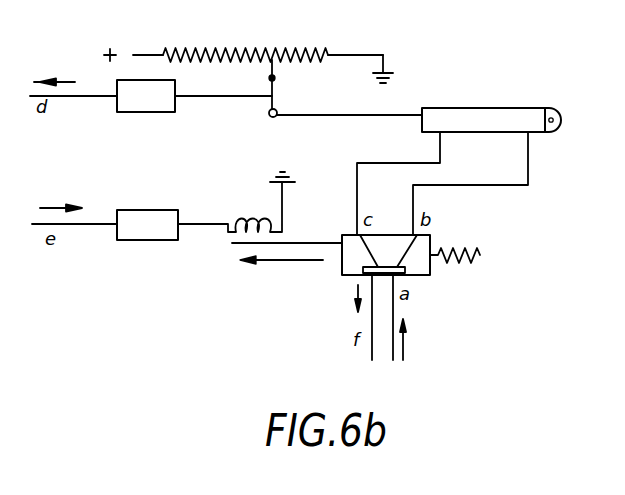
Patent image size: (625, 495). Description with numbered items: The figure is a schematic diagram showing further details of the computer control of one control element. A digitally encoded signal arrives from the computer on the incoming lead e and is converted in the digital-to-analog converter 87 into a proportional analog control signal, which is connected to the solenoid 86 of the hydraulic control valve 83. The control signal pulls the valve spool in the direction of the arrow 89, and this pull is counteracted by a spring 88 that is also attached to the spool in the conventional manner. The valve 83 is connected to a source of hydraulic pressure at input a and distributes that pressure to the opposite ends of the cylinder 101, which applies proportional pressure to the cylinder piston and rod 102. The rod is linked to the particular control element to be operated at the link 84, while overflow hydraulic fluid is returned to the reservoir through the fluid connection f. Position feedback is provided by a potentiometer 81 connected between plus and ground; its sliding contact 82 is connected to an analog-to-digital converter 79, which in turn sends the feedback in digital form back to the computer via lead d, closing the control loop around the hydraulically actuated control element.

The analog-to-digital converter 79 is at (150, 113).
The potentiometer 81 is at (328, 52).
The sliding contact 82 is at (275, 76).
The link 84 is at (263, 138).
The solenoid 86 is at (256, 222).
The digital-to-analog converter 87 is at (165, 240).
The spring 88 is at (468, 263).
The arrow 89 is at (290, 262).
The cylinder 101 is at (426, 130).
The cylinder piston and rod 102 is at (402, 118).
The hydraulic control valve 83 is at (430, 243).